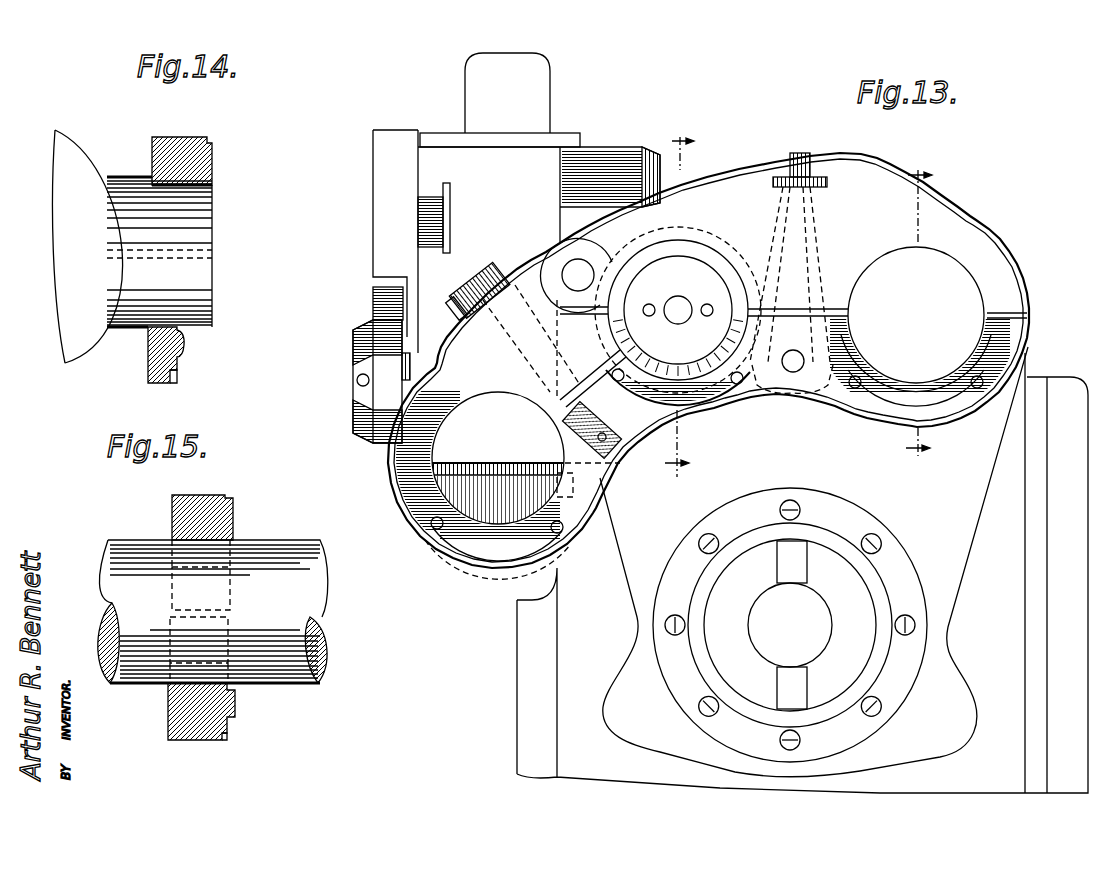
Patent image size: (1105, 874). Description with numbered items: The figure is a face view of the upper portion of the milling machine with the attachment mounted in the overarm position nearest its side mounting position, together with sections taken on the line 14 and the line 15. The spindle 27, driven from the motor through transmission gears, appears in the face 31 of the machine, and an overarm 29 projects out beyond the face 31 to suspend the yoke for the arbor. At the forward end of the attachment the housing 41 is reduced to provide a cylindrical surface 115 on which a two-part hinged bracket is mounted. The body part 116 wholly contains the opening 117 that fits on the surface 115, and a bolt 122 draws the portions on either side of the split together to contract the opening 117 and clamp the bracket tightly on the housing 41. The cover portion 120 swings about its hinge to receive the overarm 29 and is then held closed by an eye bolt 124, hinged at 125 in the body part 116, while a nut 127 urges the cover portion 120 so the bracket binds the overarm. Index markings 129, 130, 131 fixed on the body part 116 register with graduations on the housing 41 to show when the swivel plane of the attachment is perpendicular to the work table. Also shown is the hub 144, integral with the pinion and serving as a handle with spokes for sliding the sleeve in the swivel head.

In FIG. 13, the section line 14- 14 is at (677, 307).
In FIG. 13, the section line 15- 15 is at (918, 317).
In FIG. 13, the spindle 27 is at (771, 642).
In FIG. 13, the overarm 29 is at (978, 300).
In FIG. 13, the face 31 is at (633, 558).
In FIG. 14, the housing 41 is at (120, 177).
In FIG. 13, the housing 41 is at (784, 342).
In FIG. 14, the cylindrical surface 115 is at (204, 288).
In FIG. 14, the body part 116 is at (198, 380).
In FIG. 15, the body part 116 is at (210, 730).
In FIG. 13, the body part 116 is at (842, 393).
In FIG. 13, the opening 117 is at (500, 459).
In FIG. 14, the cover portion 120 is at (210, 165).
In FIG. 15, the cover portion 120 is at (230, 504).
In FIG. 13, the cover portion 120 is at (857, 197).
In FIG. 13, the bolt 122 is at (461, 270).
In FIG. 13, the eye bolt 124 is at (797, 233).
In FIG. 13, the hinge 125 is at (794, 370).
In FIG. 13, the nut 127 is at (822, 162).
In FIG. 15, the index marking 129 is at (305, 605).
In FIG. 13, the index marking 129 is at (895, 403).
In FIG. 14, the index marking 130 is at (186, 352).
In FIG. 13, the index marking 130 is at (717, 392).
In FIG. 13, the index marking 131 is at (483, 530).
In FIG. 13, the hub 144 is at (362, 437).